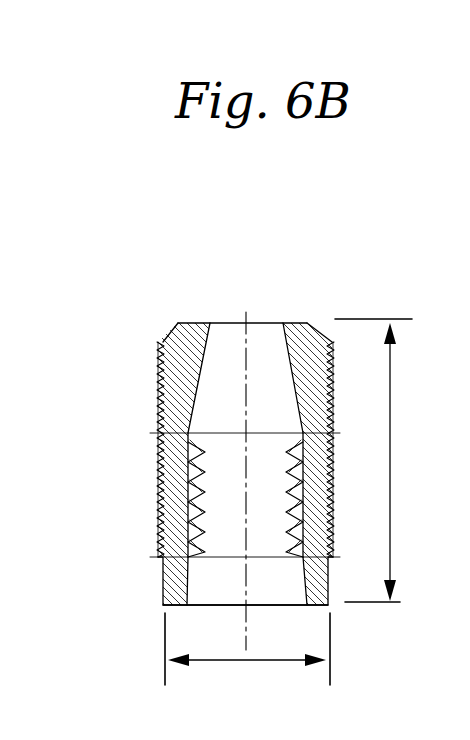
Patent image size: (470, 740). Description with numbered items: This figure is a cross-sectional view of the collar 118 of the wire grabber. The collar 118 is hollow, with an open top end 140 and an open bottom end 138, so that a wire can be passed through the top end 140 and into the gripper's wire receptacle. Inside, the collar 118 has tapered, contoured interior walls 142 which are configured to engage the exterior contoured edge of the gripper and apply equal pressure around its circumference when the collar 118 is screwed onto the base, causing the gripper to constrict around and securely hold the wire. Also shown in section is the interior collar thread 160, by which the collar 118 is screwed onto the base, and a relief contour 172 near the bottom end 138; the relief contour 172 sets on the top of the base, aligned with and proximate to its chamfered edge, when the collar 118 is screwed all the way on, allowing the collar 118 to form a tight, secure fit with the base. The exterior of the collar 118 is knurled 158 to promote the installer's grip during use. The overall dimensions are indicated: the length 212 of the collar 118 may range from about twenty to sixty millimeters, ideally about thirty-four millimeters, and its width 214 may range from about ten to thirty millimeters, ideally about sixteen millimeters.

The collar 118 is at (254, 268).
The bottom end 138 is at (190, 607).
The top end 140 is at (297, 322).
The contoured interior wall 142 is at (293, 372).
The knurled 158 is at (160, 493).
The interior collar thread 160 is at (197, 527).
The relief contour 172 is at (188, 580).
The length 212 is at (390, 507).
The width 214 is at (306, 660).